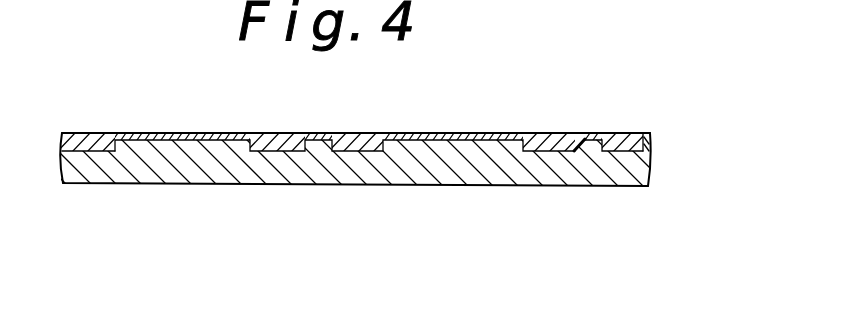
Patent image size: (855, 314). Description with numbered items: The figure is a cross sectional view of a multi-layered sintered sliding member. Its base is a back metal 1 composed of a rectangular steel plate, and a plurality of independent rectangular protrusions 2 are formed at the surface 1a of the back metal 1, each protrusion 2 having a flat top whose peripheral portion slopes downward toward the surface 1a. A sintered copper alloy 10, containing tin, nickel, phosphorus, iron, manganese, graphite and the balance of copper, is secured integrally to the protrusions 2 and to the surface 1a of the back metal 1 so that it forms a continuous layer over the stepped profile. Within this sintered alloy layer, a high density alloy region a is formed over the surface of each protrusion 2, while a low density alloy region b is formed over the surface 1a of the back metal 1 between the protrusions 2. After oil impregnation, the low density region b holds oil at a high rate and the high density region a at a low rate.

The back metal 1 is at (422, 203).
The surface of the back metal 1a is at (649, 131).
The rectangular protrusion 2 is at (413, 134).
The sintered copper alloy 10 is at (350, 134).
The high density alloy region a is at (478, 134).
The low density alloy region b is at (550, 134).